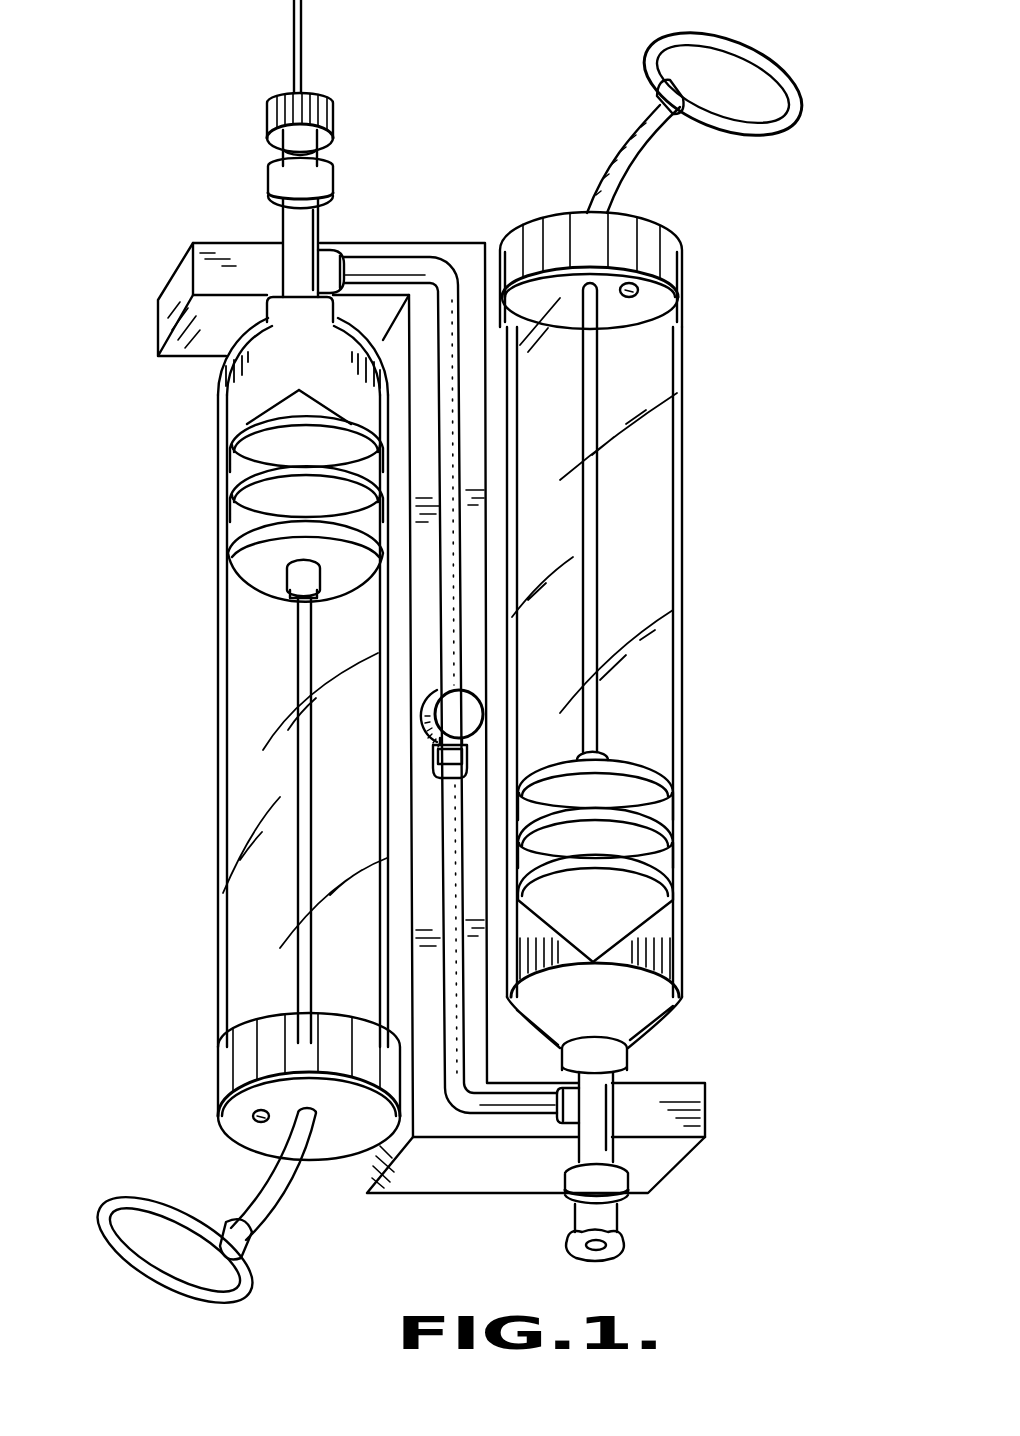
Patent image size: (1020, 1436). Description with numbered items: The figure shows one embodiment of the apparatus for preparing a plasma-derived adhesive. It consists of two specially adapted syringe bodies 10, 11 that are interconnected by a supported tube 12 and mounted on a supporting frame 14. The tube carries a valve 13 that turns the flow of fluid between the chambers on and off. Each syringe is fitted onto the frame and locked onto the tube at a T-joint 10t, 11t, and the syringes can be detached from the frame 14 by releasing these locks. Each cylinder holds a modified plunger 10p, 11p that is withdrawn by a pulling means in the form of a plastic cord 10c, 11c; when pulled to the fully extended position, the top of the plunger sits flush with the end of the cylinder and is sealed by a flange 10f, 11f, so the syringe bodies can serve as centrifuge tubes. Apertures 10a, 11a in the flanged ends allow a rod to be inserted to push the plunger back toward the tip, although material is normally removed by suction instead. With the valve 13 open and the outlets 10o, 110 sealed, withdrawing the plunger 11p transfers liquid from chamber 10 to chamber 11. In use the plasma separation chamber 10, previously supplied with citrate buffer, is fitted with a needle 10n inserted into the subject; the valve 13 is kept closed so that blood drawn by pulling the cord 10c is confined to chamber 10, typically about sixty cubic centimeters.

The syringe body 10 is at (250, 785).
The needle 10n is at (302, 45).
The outlet 10o is at (323, 93).
The T-joint 10t is at (283, 232).
The plunger 10p is at (228, 496).
The cord 10c is at (297, 650).
The flange 10f is at (219, 1063).
The aperture 10a is at (256, 1121).
The syringe body 11 is at (645, 665).
The flange 11f is at (683, 267).
The aperture 11a is at (637, 294).
The cord 11c is at (597, 540).
The plunger 11p is at (674, 823).
The T-joint 11t is at (603, 1116).
The outlet 110 is at (623, 1245).
The tube 12 is at (440, 898).
The valve 13 is at (464, 702).
The supporting frame 14 is at (446, 238).